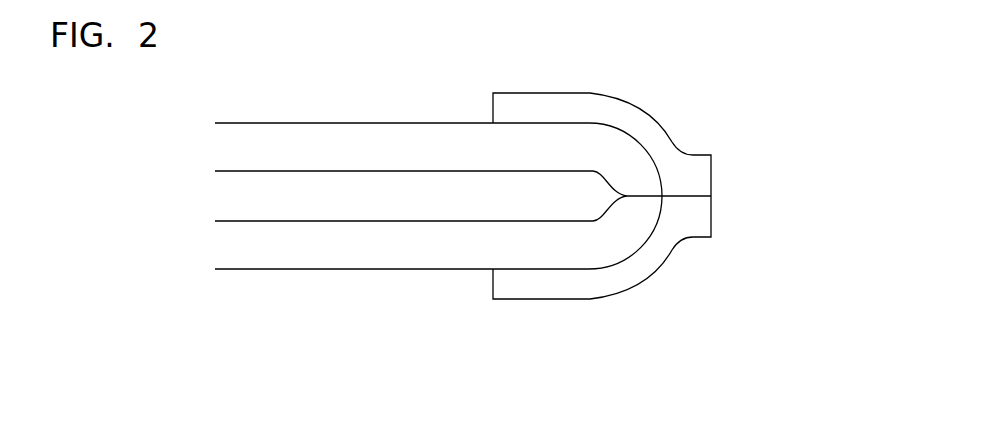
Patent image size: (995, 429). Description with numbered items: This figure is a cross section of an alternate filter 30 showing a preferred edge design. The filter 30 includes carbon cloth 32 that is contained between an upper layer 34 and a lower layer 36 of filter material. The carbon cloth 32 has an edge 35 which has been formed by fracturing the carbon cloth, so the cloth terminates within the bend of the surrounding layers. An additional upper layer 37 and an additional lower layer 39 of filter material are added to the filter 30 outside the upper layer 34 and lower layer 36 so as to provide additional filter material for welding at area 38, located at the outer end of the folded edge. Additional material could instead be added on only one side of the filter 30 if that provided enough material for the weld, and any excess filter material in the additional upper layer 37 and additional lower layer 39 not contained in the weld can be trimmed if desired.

The filter 30 is at (306, 109).
The carbon cloth 32 is at (252, 200).
The upper layer 34 is at (352, 152).
The edge 35 is at (555, 204).
The lower layer 36 is at (393, 257).
The additional upper layer 37 is at (576, 106).
The area 38 is at (700, 196).
The additional lower layer 39 is at (592, 285).